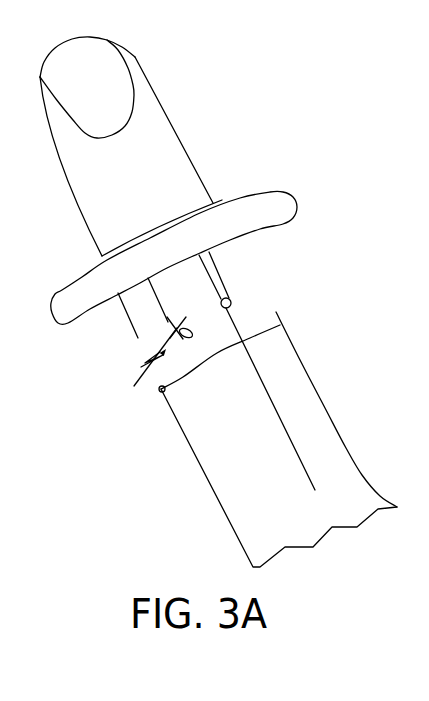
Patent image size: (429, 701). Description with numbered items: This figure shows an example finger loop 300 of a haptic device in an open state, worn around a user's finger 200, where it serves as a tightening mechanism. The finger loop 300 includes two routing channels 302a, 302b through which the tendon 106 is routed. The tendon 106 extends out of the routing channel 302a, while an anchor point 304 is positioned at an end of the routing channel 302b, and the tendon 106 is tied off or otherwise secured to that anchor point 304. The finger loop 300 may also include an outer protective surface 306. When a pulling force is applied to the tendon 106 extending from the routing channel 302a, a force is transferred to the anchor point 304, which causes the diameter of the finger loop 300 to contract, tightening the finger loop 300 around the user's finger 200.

The finger 200 is at (168, 147).
The finger loop 300 is at (157, 249).
The routing channel 302a is at (222, 289).
The routing channel 302b is at (163, 320).
The anchor point 304 is at (137, 373).
The outer protective surface 306 is at (275, 308).
The tendon 106 is at (302, 446).